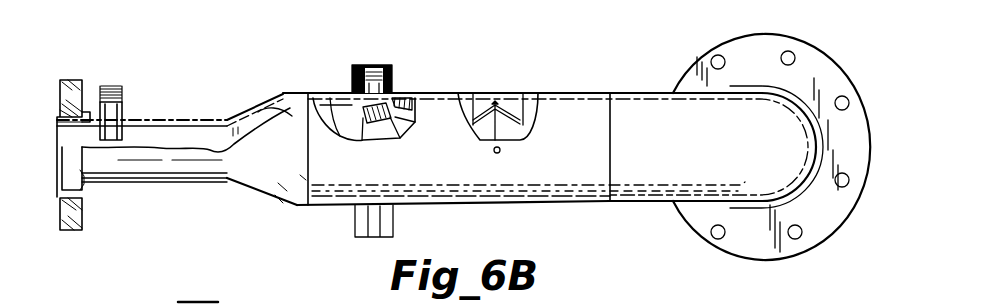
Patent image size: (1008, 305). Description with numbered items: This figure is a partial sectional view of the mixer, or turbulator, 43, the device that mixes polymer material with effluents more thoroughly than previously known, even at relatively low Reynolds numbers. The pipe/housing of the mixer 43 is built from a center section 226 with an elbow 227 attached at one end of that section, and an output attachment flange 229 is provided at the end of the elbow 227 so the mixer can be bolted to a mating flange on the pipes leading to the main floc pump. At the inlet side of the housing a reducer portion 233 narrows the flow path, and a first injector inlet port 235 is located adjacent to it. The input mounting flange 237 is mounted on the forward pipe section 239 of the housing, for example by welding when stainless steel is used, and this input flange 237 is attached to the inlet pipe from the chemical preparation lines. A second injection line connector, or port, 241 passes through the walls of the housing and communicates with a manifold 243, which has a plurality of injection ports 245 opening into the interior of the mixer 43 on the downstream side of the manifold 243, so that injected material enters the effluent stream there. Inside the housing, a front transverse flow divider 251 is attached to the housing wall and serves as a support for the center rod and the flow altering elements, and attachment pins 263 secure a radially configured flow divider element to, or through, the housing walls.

The output attachment flange 229 is at (807, 62).
The elbow 227 is at (634, 103).
The center section 226 is at (600, 200).
The reducer portion 233 is at (296, 102).
The forward pipe section 239 is at (250, 87).
The input mounting flange 237 is at (108, 58).
The first injector inlet port 235 is at (124, 106).
The front transverse flow divider 251 is at (338, 103).
The second injection line connector 241 is at (390, 93).
The manifold 243 is at (400, 100).
The injection ports 245 is at (390, 132).
The attachment pins 263 is at (500, 153).
The mixer 43 is at (561, 74).